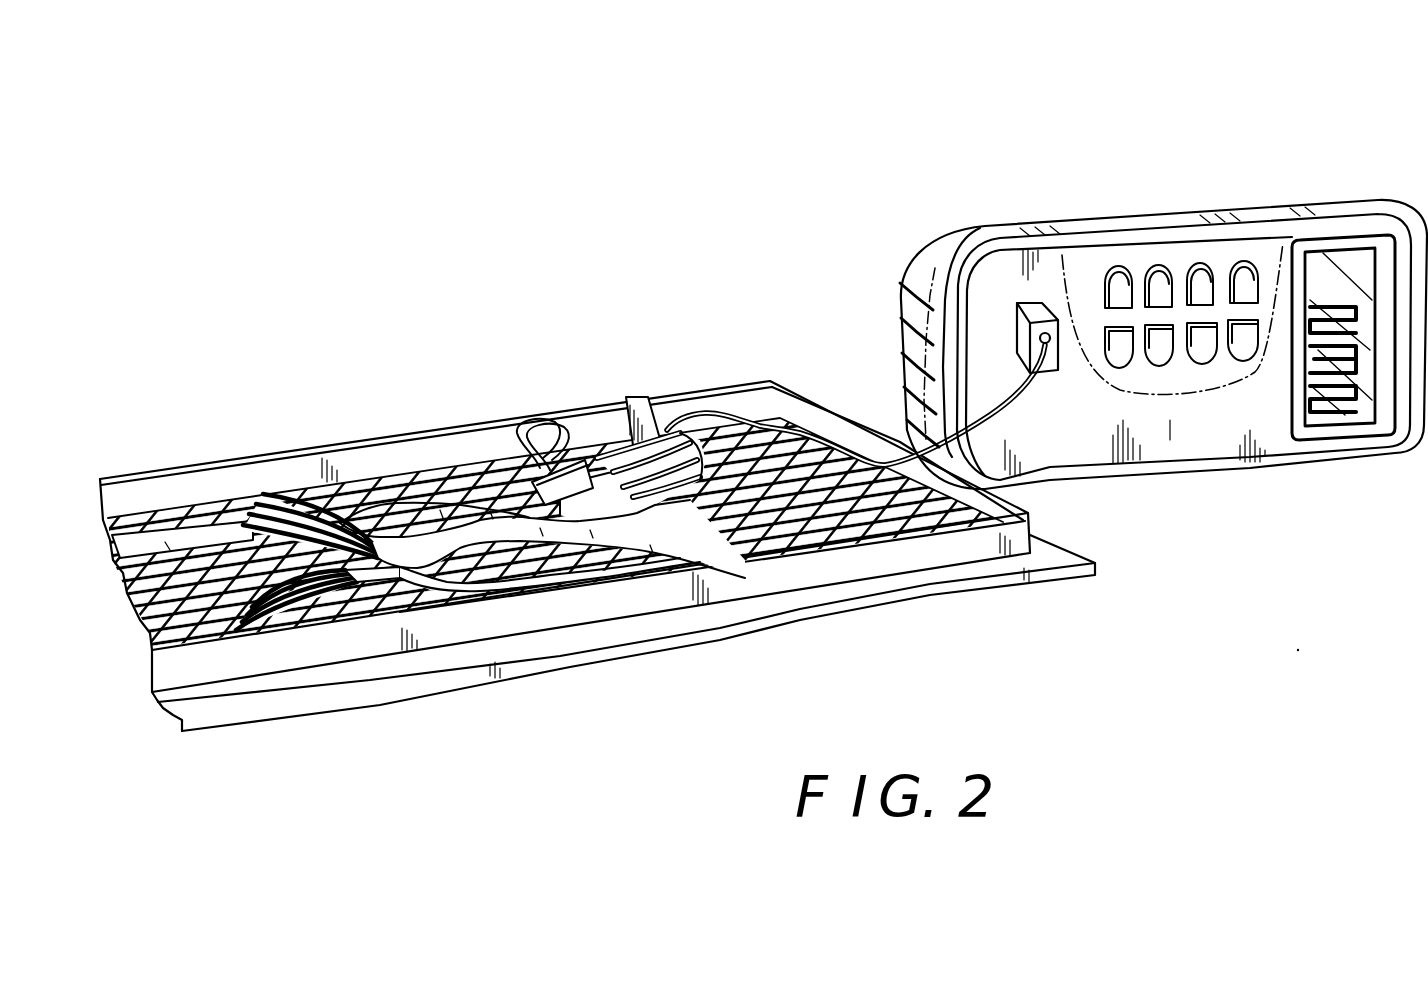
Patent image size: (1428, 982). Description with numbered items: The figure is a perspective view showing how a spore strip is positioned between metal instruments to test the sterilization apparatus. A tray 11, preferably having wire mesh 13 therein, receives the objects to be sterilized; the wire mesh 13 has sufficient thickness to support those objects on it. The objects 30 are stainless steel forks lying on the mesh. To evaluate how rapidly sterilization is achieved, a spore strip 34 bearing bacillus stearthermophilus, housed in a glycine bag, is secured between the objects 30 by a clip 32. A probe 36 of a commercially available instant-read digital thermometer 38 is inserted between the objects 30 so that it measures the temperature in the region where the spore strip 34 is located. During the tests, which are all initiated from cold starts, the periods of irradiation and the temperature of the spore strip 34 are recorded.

The tray 11 is at (388, 445).
The wire mesh 13 is at (170, 517).
The objects 30 is at (317, 520).
The clip 32 is at (500, 435).
The spore strip 34 is at (640, 433).
The probe 36 is at (708, 417).
The digital thermometer 38 is at (1172, 212).